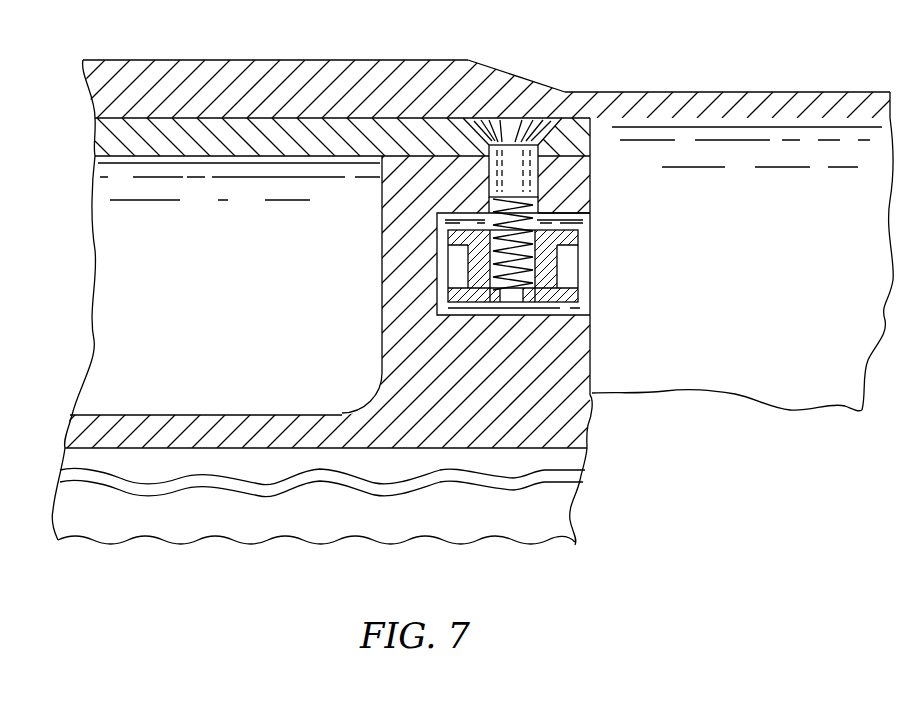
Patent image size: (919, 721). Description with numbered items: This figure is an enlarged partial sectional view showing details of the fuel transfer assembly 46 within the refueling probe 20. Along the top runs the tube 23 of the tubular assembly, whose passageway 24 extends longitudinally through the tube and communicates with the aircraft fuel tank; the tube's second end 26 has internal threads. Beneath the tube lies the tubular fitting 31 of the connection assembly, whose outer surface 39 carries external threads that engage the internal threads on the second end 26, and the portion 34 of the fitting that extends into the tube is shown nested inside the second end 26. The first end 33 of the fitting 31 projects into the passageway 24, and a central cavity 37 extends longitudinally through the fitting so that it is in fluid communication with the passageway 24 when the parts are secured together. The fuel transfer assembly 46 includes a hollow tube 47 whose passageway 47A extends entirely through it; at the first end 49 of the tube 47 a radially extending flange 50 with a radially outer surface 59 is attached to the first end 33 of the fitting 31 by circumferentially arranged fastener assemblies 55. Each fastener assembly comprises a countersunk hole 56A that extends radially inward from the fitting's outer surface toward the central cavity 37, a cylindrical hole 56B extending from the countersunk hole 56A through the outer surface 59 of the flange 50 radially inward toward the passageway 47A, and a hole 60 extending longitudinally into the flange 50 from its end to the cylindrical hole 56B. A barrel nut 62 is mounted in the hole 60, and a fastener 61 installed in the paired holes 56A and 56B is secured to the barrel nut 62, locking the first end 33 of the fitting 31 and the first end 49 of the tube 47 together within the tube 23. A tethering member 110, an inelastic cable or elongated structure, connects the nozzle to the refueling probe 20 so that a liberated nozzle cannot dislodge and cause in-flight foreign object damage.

The refueling probe 20 is at (728, 84).
The tube 23 is at (467, 58).
The passageway 24 is at (760, 138).
The second end 26 is at (130, 72).
The tubular fitting 31 is at (86, 134).
The first end 33 is at (440, 127).
The portion of the fitting 34 is at (240, 128).
The central cavity 37 is at (212, 312).
The outer surface 39 is at (290, 117).
The fuel transfer assembly 46 is at (604, 346).
The hollow tube 47 is at (205, 414).
The passageway 47A is at (308, 524).
The first end 49 is at (592, 405).
The flange 50 is at (583, 172).
The fastener assemblies 55 is at (515, 128).
The countersunk hole 56A is at (568, 132).
The cylindrical hole 56B is at (478, 173).
The radially outer surface 59 is at (347, 143).
The hole 60 is at (604, 272).
The fastener 61 is at (505, 110).
The barrel nut 62 is at (449, 265).
The tethering member 110 is at (565, 495).